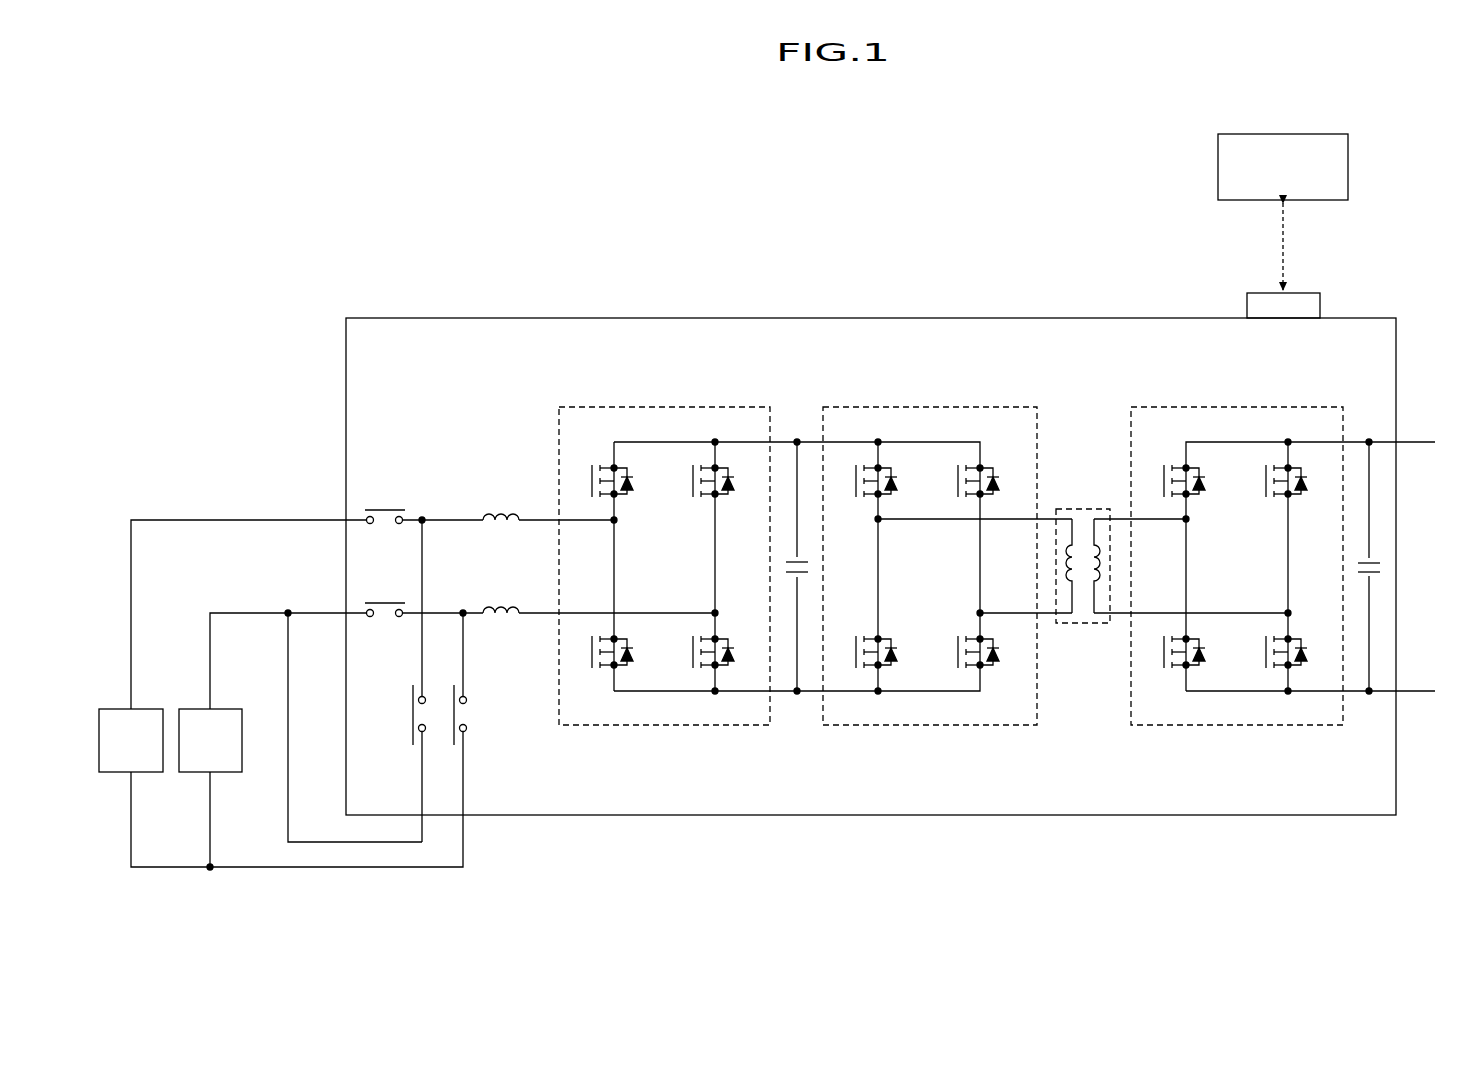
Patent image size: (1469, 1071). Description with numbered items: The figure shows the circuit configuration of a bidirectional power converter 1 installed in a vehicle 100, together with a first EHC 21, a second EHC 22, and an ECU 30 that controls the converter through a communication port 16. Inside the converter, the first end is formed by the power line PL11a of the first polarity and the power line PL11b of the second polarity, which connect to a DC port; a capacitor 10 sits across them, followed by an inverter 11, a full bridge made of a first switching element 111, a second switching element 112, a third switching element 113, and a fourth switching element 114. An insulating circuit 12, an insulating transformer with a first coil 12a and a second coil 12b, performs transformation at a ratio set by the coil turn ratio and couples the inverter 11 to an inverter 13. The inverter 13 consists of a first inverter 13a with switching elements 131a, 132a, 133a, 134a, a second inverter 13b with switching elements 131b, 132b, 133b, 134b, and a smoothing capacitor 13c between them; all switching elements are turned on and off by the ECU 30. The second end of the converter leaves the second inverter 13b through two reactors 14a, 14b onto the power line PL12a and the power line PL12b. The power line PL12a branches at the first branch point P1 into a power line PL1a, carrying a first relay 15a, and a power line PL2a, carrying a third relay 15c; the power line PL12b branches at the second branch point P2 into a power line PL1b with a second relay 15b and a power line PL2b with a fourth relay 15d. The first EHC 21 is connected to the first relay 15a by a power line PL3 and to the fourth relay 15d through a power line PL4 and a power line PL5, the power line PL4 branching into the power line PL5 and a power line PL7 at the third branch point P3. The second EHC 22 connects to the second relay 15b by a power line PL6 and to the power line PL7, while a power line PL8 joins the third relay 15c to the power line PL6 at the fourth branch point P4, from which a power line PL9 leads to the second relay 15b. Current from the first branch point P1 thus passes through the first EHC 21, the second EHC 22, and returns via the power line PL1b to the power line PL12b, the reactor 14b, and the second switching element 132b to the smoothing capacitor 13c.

The vehicle 100 is at (388, 294).
The bidirectional power converter 1 is at (889, 318).
The ECU 30 is at (1283, 134).
The communication port 16 is at (1306, 292).
The first EHC 21 is at (142, 709).
The second EHC 22 is at (220, 709).
The capacitor 10 is at (1380, 551).
The inverter 11 is at (1231, 544).
The insulating circuit 12 is at (1086, 554).
The first coil 12a is at (1083, 545).
The second coil 12b is at (1084, 586).
The inverter 13 is at (890, 366).
The first inverter 13a is at (934, 544).
The second inverter 13b is at (678, 544).
The smoothing capacitor 13c is at (806, 552).
The reactor 14a is at (500, 522).
The reactor 14b is at (502, 615).
The first relay 15a is at (383, 502).
The second relay 15b is at (383, 597).
The third relay 15c is at (404, 738).
The fourth relay 15d is at (480, 737).
The first switching element 111 is at (1299, 507).
The second switching element 112 is at (1300, 628).
The third switching element 113 is at (1178, 456).
The fourth switching element 114 is at (1176, 679).
The first switching element 131a is at (998, 447).
The second switching element 132a is at (988, 677).
The third switching element 133a is at (866, 506).
The fourth switching element 134a is at (866, 626).
The first switching element 131b is at (724, 505).
The second switching element 132b is at (741, 614).
The third switching element 133b is at (606, 457).
The fourth switching element 134b is at (605, 677).
The first branch point P1 is at (424, 518).
The second branch point P2 is at (462, 616).
The third branch point P3 is at (211, 870).
The fourth branch point P4 is at (287, 616).
The power line PL1a is at (412, 519).
The power line PL1b is at (447, 611).
The power line PL2a is at (421, 656).
The power line PL2b is at (464, 656).
The power line PL3 is at (270, 519).
The power line PL4 is at (162, 869).
The power line PL5 is at (311, 869).
The power line PL6 is at (270, 612).
The power line PL7 is at (210, 826).
The power line PL8 is at (288, 799).
The power line PL9 is at (314, 614).
The power line PL11a is at (1432, 442).
The power line PL11b is at (1432, 691).
The power line PL12a is at (468, 519).
The power line PL12b is at (470, 613).